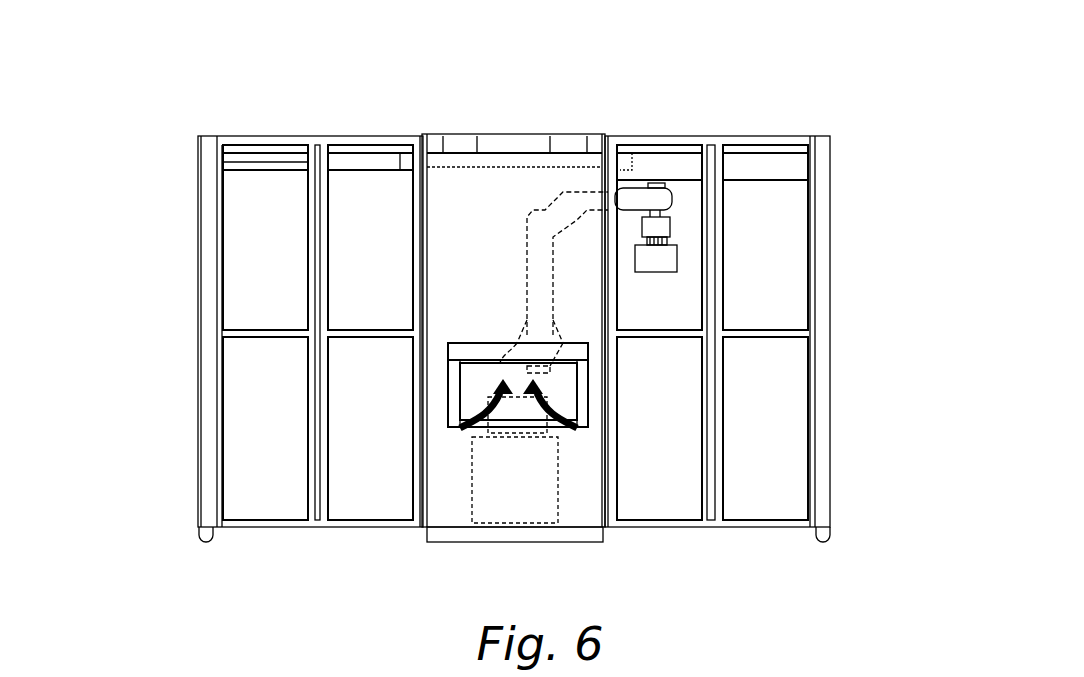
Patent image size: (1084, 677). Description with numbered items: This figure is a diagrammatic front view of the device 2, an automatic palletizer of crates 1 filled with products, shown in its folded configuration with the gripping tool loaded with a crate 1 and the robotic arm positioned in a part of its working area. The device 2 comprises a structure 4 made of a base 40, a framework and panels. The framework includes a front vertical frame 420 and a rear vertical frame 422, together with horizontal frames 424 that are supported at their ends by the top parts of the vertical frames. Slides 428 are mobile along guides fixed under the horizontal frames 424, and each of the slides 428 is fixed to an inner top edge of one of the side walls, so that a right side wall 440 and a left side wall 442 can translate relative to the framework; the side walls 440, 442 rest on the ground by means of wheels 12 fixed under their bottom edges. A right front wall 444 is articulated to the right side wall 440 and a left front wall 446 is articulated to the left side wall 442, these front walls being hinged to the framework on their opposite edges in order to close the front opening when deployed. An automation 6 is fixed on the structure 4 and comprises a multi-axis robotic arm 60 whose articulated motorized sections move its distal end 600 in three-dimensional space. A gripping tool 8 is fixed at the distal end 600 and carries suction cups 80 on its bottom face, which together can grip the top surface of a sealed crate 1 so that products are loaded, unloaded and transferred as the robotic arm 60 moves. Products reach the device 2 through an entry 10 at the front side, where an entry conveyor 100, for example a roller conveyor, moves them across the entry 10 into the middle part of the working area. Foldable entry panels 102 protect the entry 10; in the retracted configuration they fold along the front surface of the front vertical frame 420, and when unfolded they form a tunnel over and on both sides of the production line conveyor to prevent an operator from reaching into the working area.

The device 2 is at (172, 109).
The structure 4 is at (165, 541).
The automation 6 is at (452, 491).
The tool 8 is at (670, 223).
The entry 10 is at (563, 400).
The wheels 12 is at (832, 533).
The base 40 is at (587, 532).
The robotic arm 60 is at (540, 307).
The suction cups 80 is at (672, 237).
The entry conveyor 100 is at (567, 437).
The entry panels 102 is at (450, 428).
The crate 1 is at (657, 257).
The front vertical frame 420 is at (598, 133).
The rear vertical frame 422 is at (263, 427).
The horizontal frames 424 is at (572, 145).
The slides 428 is at (272, 163).
The right side wall 440 is at (820, 427).
The left side wall 442 is at (210, 215).
The right front wall 444 is at (773, 142).
The left front wall 446 is at (370, 150).
The distal end 600 is at (672, 200).